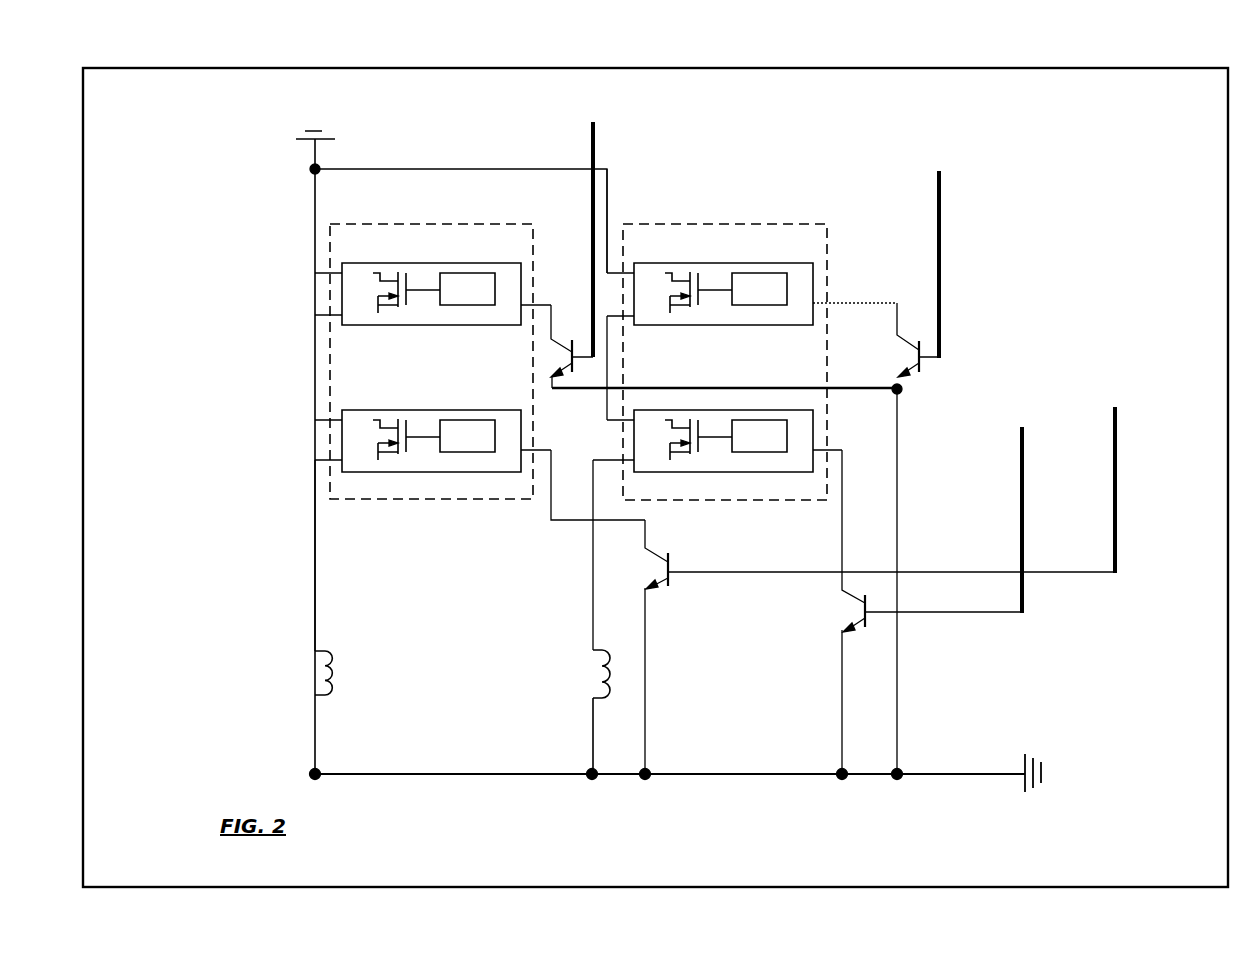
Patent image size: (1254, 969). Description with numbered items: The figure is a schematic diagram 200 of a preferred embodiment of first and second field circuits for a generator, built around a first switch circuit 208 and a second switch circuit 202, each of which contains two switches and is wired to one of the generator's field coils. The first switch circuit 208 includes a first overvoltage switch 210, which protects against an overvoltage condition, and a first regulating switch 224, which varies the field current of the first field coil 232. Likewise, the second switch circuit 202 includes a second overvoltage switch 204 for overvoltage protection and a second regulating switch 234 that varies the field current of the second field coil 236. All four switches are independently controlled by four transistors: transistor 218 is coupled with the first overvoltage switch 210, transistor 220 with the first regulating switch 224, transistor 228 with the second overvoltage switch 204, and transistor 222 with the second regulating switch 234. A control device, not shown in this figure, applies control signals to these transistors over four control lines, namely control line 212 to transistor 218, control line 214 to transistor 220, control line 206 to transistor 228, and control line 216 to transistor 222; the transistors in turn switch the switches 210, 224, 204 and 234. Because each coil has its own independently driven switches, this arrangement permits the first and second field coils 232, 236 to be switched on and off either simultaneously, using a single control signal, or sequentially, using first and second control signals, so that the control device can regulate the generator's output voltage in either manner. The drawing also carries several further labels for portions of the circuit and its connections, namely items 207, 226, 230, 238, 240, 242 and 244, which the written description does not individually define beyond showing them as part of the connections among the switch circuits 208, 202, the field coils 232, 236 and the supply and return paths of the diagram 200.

The schematic diagram 200 is at (180, 65).
The second switch circuit 202 is at (352, 225).
The second overvoltage switch 204 is at (410, 263).
The control line 206 is at (593, 197).
The supply wire 207 is at (607, 223).
The first switch circuit 208 is at (650, 223).
The first overvoltage switch 210 is at (672, 263).
The control line 212 is at (941, 262).
The control line 214 is at (1024, 444).
The control line 216 is at (1117, 463).
The transistor 218 is at (903, 374).
The transistor 220 is at (843, 632).
The transistor 222 is at (652, 580).
The first regulating switch 224 is at (707, 472).
The connecting wire 226 is at (653, 387).
The transistor 228 is at (570, 350).
The field coil 1 wire 230 is at (593, 533).
The first field coil 232 is at (600, 670).
The second regulating switch 234 is at (430, 472).
The second field coil 236 is at (325, 695).
The field coil 2 wire 238 is at (313, 477).
The positive supply wire 240 is at (315, 225).
The positive terminal 242 is at (313, 140).
The negative terminal 244 is at (1023, 770).